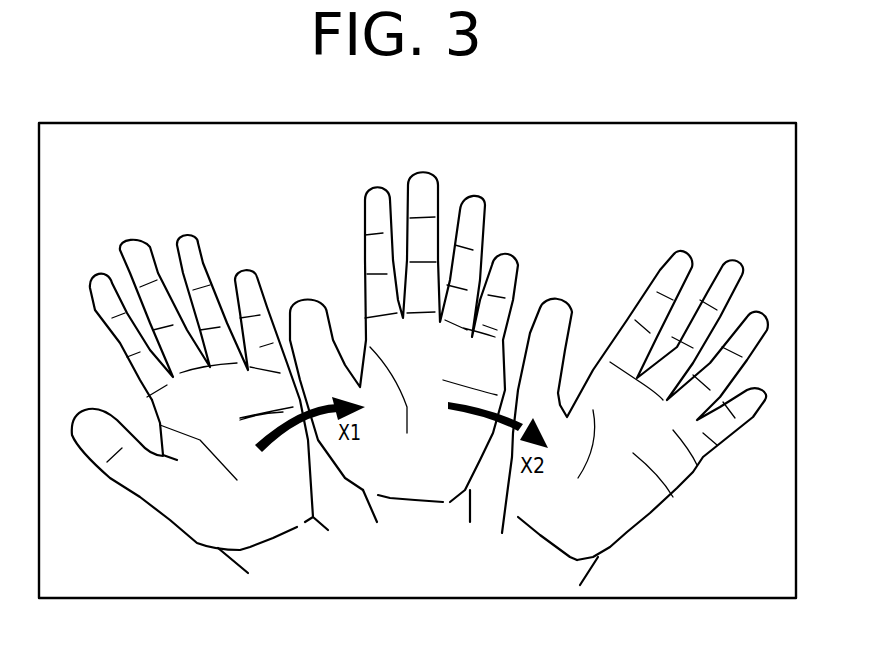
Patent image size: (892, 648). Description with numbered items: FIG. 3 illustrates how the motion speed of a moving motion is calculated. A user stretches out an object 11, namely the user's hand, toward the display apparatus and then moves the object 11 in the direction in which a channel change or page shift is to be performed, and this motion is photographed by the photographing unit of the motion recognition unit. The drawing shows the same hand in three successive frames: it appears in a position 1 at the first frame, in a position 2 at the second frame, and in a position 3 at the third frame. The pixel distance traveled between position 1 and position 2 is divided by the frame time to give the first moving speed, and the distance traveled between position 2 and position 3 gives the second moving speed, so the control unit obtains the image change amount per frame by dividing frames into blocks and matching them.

The object 11 is at (190, 252).
The position ① 1 is at (115, 222).
The position ② 2 is at (404, 331).
The position ③ 3 is at (635, 408).